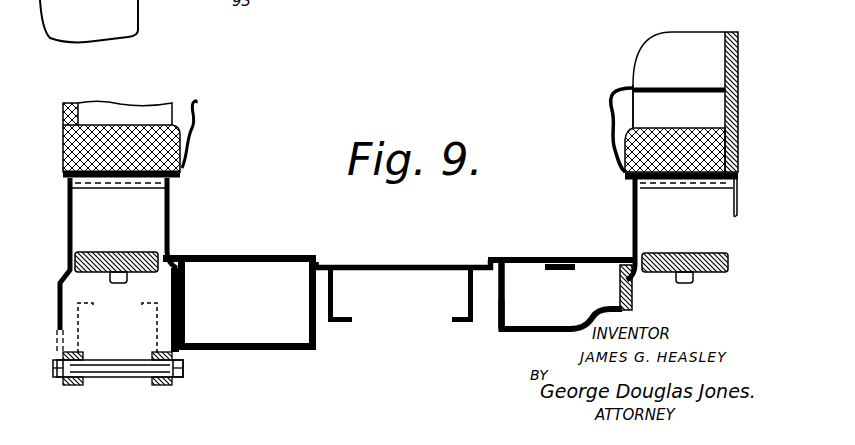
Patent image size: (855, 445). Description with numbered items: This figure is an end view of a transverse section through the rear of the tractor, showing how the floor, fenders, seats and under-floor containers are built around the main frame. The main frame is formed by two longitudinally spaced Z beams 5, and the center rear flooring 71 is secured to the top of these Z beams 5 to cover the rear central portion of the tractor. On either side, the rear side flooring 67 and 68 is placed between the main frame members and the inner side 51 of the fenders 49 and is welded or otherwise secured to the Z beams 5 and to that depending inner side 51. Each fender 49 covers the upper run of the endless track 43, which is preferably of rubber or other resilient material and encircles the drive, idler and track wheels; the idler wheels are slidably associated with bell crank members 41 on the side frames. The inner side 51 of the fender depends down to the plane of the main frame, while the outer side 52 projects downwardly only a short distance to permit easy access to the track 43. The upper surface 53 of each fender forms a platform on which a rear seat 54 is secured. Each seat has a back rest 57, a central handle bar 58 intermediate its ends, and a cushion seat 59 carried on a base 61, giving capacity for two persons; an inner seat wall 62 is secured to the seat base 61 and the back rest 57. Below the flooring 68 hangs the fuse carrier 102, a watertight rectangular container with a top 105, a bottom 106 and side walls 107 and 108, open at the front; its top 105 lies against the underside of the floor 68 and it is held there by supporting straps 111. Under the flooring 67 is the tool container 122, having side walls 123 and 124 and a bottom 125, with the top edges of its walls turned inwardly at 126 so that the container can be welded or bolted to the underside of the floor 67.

The Z beam 5 is at (334, 290).
The bell crank member 41 is at (173, 384).
The endless track 43 is at (130, 247).
The fender 49 is at (176, 179).
The inner side of fender 51 is at (172, 221).
The outer side of fender 52 is at (65, 180).
The upper surface of fender 53 is at (114, 176).
The rear seat 54 is at (150, 115).
The back rest 57 is at (740, 105).
The central handle bar 58 is at (651, 91).
The cushion seat 59 is at (110, 127).
The seat base 61 is at (182, 172).
The inner seat wall 62 is at (668, 95).
The rear side flooring 67 is at (267, 256).
The rear side flooring 68 is at (541, 257).
The center rear flooring 71 is at (407, 257).
The fuse carrier 102 is at (536, 319).
The top of fuse carrier 105 is at (522, 266).
The bottom of fuse carrier 106 is at (517, 330).
The side wall of fuse carrier 107 is at (502, 309).
The side wall of fuse carrier 108 is at (618, 298).
The supporting strap 111 is at (497, 311).
The tool container 122 is at (238, 303).
The side wall of tool container 123 is at (182, 328).
The side wall of tool container 124 is at (310, 333).
The bottom of tool container 125 is at (227, 350).
The inturned top edge 126 is at (208, 257).